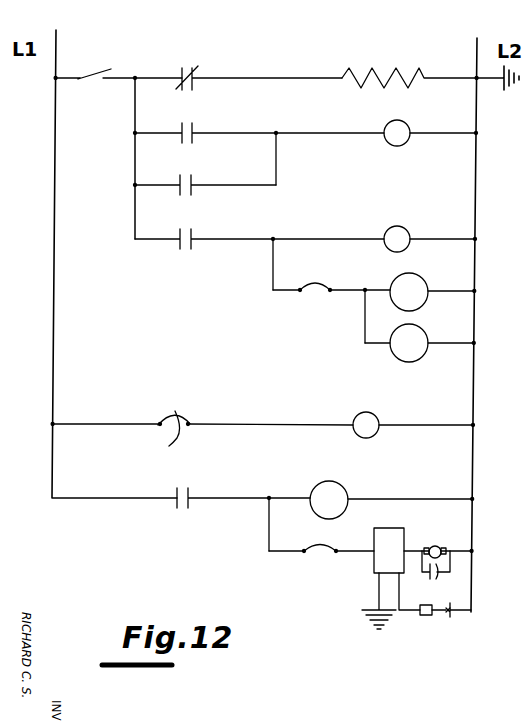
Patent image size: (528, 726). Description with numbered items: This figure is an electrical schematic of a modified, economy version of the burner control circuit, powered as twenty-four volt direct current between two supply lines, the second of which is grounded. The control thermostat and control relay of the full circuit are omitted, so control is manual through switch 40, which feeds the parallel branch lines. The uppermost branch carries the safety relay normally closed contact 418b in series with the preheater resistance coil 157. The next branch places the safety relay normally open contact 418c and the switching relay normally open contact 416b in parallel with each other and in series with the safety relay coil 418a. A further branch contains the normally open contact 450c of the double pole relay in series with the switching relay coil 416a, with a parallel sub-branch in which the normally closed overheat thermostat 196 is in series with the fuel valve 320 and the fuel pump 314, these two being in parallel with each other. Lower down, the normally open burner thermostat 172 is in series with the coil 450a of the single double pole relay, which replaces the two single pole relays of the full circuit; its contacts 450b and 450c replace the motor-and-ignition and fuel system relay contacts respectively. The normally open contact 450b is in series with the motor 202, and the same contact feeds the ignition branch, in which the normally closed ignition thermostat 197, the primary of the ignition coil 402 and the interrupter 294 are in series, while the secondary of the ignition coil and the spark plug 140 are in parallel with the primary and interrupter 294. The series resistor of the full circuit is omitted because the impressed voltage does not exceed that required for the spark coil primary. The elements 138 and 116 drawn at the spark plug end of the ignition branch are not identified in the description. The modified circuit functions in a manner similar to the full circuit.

The switch 40 is at (97, 70).
The safety relay normally closed contact 418b is at (200, 72).
The preheater resistance coil 157 is at (380, 85).
The safety relay normally open contact 418c is at (194, 130).
The safety relay coil 418a is at (409, 126).
The switching relay normally open contact 416b is at (193, 185).
The normally open contact 450c is at (195, 237).
The switching relay coil 416a is at (389, 231).
The overheat thermostat 196 is at (315, 284).
The fuel valve 320 is at (415, 274).
The fuel pump 314 is at (394, 356).
The burner thermostat 172 is at (169, 446).
The double pole relay coil 450a is at (375, 416).
The normally open contact 450b is at (191, 495).
The motor 202 is at (318, 486).
The ignition thermostat 197 is at (316, 546).
The ignition coil 402 is at (372, 563).
The interrupter 294 is at (434, 546).
The spark plug 140 is at (428, 617).
The contact 138 is at (440, 618).
The terminal 116 is at (452, 614).